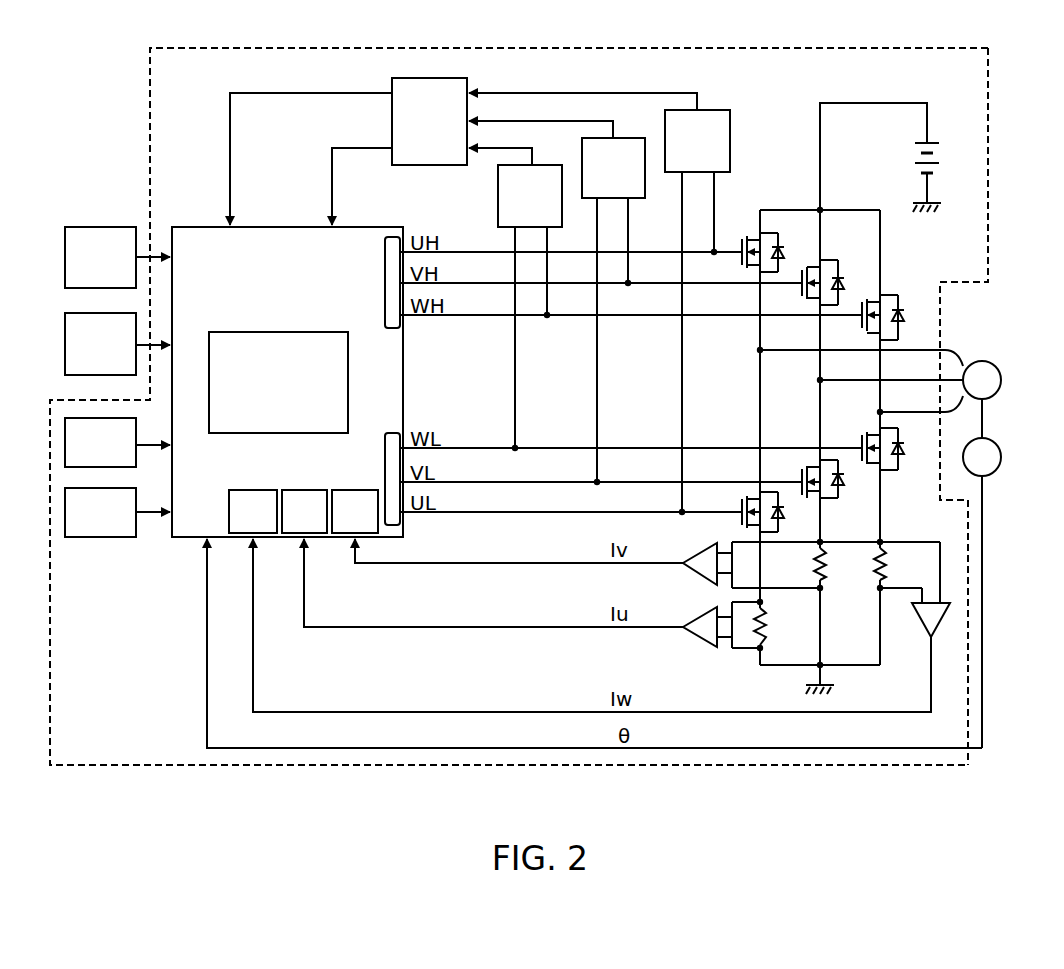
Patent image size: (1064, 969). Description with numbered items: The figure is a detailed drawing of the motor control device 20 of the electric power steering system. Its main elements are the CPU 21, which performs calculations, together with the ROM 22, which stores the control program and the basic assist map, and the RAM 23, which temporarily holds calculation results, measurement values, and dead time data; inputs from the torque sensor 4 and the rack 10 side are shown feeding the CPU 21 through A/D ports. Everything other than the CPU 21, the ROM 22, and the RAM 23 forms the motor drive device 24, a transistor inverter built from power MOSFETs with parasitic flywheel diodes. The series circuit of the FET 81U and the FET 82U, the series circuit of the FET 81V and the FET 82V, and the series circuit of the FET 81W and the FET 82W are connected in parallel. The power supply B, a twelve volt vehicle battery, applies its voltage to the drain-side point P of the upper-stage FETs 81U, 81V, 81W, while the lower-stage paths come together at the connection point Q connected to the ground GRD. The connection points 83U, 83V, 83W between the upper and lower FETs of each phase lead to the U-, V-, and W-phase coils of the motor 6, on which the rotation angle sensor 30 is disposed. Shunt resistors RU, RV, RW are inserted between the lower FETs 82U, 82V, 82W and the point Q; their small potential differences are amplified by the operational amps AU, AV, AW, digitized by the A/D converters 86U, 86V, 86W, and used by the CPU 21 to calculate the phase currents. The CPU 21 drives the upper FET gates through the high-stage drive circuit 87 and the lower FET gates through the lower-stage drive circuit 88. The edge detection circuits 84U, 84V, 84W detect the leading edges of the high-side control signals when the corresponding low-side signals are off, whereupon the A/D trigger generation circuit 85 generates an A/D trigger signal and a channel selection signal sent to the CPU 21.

The torque sensor 4 is at (65, 262).
The rack 10 is at (65, 344).
The RAM 23 is at (65, 444).
The ROM 22 is at (65, 511).
The CPU 21 is at (348, 378).
The motor drive device 24 is at (972, 93).
The motor control device 20 is at (988, 214).
The A/D trigger generation circuit 85 is at (457, 73).
The edge detection circuit 84W is at (549, 164).
The edge detection circuit 84V is at (629, 138).
The edge detection circuit 84U is at (708, 110).
The high-stage drive circuit 87 is at (393, 328).
The lower-stage drive circuit 88 is at (393, 433).
The A/D converter 86W is at (248, 490).
The A/D converter 86U is at (299, 490).
The A/D converter 86V is at (351, 490).
The FET 81U is at (738, 244).
The FET 81V is at (799, 268).
The FET 81W is at (860, 300).
The FET 82U is at (742, 515).
The FET 82V is at (803, 500).
The FET 82W is at (860, 470).
The connection point 83U is at (758, 350).
The connection point 83V is at (820, 380).
The connection point 83W is at (880, 412).
The motor 6 is at (988, 361).
The rotation angle sensor 30 is at (991, 441).
The power supply B is at (931, 143).
The drain-side point P is at (821, 209).
The connection point Q is at (822, 664).
The shunt resistor RU is at (766, 628).
The shunt resistor RV is at (814, 566).
The shunt resistor RW is at (877, 568).
The operational amp AU is at (694, 638).
The operational amp AV is at (694, 575).
The operational amp AW is at (928, 643).
The ground GRD is at (812, 686).